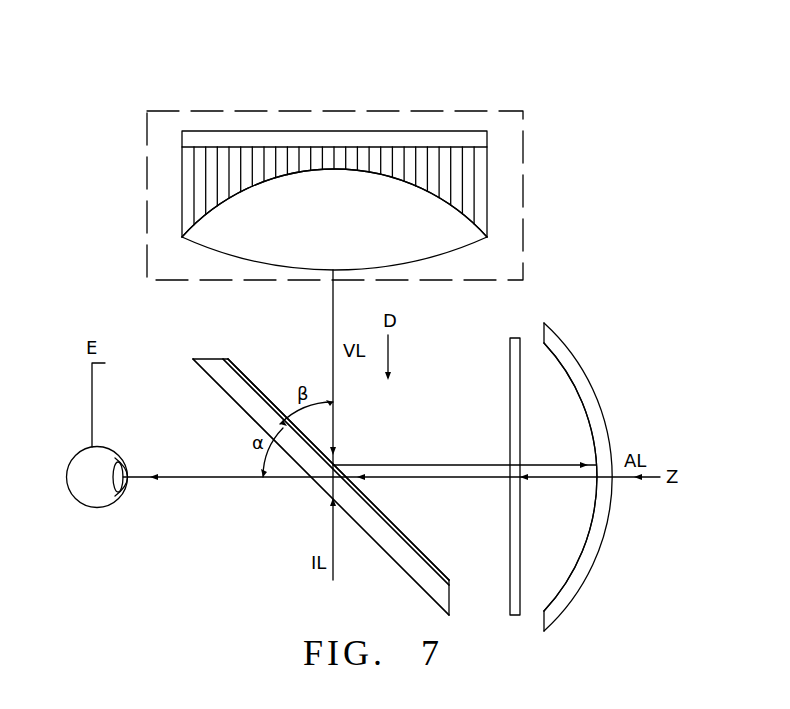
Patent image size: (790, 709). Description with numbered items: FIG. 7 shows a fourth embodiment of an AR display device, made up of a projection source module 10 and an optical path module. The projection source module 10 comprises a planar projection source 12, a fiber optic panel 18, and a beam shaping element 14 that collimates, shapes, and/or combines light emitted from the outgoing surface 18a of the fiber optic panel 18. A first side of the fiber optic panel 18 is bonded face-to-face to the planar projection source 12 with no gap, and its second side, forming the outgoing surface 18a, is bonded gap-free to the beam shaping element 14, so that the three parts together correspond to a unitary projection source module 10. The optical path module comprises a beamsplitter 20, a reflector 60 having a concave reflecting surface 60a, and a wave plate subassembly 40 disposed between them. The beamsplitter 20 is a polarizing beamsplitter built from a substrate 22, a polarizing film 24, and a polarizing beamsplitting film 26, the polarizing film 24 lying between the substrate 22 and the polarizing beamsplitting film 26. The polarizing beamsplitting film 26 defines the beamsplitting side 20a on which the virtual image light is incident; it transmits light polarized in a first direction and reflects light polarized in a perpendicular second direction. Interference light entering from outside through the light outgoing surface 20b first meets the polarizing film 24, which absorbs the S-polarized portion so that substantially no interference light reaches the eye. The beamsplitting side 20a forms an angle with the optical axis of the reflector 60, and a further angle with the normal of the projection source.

The projection source module 10 is at (335, 166).
The planar projection source 12 is at (334, 99).
The beam shaping element 14 is at (334, 161).
The fiber optic panel 18 is at (334, 144).
The outgoing surface of the fiber optic panel 18a is at (334, 248).
The beamsplitter 20 is at (301, 463).
The beamsplitting side 20a is at (338, 452).
The light outgoing surface 20b is at (321, 487).
The substrate 22 is at (328, 487).
The polarizing film 24 is at (336, 472).
The polarizing beamsplitting film 26 is at (338, 469).
The wave plate subassembly 40 is at (480, 470).
The reflector 60 is at (579, 459).
The concave reflecting surface 60a is at (541, 454).